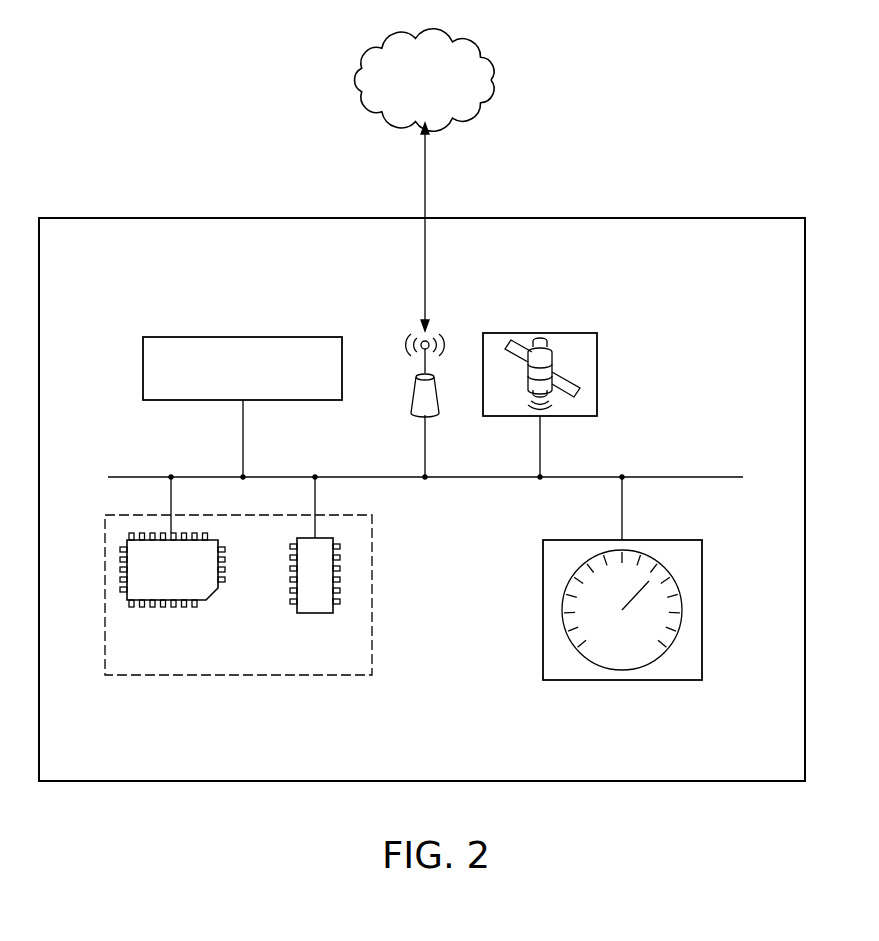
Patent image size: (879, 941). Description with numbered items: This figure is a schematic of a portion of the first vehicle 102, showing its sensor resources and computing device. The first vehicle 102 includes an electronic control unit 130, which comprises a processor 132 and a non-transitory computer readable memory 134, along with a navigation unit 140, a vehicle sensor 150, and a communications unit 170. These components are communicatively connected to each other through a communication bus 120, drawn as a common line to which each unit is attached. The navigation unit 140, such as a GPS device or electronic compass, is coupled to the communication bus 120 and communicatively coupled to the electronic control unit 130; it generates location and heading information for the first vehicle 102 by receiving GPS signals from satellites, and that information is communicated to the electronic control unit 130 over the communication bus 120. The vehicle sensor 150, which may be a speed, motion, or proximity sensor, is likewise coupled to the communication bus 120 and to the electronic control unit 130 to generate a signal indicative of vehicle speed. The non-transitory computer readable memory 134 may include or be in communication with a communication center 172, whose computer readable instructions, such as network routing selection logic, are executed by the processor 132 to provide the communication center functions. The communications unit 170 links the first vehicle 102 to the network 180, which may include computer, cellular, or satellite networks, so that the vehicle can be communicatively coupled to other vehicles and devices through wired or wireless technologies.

The first vehicle 102 is at (713, 218).
The communication bus 120 is at (153, 477).
The electronic control unit 130 is at (372, 658).
The processor 132 is at (210, 598).
The non-transitory computer readable memory 134 is at (315, 613).
The navigation unit 140 is at (541, 333).
The vehicle sensor 150 is at (622, 680).
The communications unit 170 is at (412, 383).
The communication center 172 is at (243, 337).
The network 180 is at (357, 78).